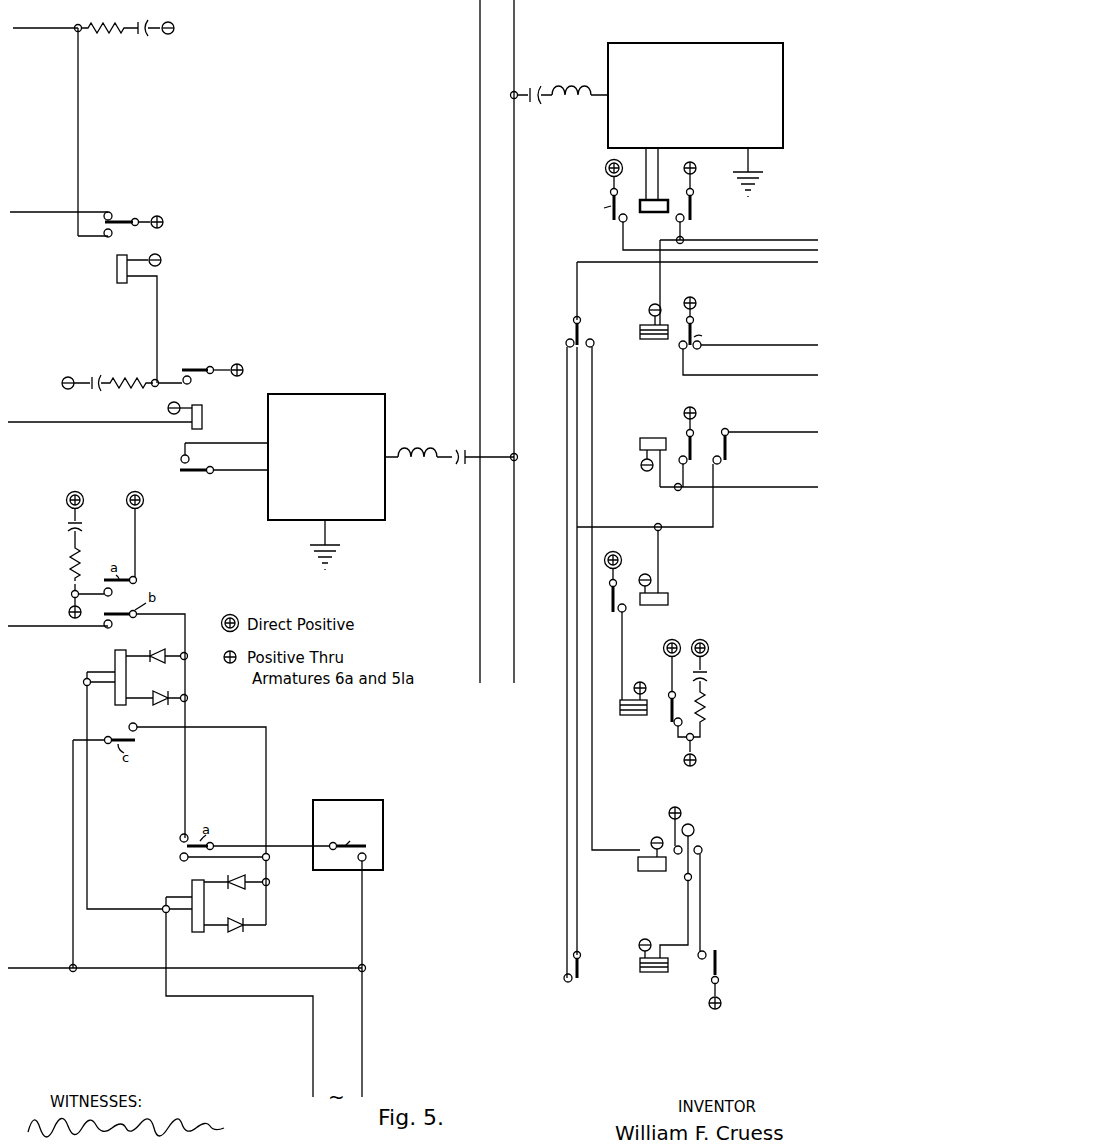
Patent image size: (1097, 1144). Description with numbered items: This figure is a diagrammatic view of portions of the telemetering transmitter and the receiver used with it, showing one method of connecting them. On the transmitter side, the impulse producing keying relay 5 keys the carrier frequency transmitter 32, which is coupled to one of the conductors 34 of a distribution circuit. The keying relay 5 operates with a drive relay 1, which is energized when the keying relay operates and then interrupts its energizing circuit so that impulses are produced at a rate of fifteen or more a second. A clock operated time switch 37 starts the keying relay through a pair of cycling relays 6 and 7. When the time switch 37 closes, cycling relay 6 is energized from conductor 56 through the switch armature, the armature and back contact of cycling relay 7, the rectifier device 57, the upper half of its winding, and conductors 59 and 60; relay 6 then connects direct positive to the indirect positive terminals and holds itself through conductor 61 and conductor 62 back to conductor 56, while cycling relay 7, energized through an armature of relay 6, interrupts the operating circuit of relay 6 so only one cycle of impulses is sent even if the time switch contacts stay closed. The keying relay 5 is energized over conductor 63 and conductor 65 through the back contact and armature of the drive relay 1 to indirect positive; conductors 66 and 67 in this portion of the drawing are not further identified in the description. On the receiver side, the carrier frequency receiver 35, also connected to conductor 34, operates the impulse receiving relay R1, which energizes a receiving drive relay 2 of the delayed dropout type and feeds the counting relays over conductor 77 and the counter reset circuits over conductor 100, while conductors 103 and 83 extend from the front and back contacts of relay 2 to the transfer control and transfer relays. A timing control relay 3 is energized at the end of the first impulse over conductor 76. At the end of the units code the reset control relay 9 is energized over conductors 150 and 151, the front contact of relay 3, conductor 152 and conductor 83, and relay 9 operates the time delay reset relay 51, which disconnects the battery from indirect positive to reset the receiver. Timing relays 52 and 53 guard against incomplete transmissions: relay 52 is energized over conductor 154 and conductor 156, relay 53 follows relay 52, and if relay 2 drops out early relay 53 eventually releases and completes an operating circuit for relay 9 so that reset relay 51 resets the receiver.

The drive relay 1 is at (115, 266).
The receiving drive relay 2 is at (640, 336).
The timing control relay 3 is at (651, 437).
The keying relay 5 is at (202, 416).
The cycling relay 6 is at (136, 726).
The cycling relay 7 is at (204, 901).
The reset control relay 9 is at (667, 600).
The carrier frequency transmitter 32 is at (312, 392).
The conductor 34 is at (514, 298).
The carrier frequency receiver 35 is at (644, 43).
The clock operated time switch 37 is at (383, 841).
The time delay reset relay 51 is at (644, 716).
The timing relay 52 is at (640, 872).
The time delay relay 53 is at (655, 973).
The conductor 56 is at (362, 947).
The rectifier device 57 is at (126, 678).
The conductor 59 is at (87, 840).
The conductor 60 is at (166, 950).
The conductor 61 is at (50, 627).
The conductor 62 is at (58, 968).
The conductor 63 is at (70, 423).
The conductor 65 is at (50, 213).
The conductor 66 is at (78, 142).
The conductor 67 is at (60, 30).
The conductor 76 is at (752, 488).
The conductor 77 is at (740, 240).
The conductor 83 is at (752, 347).
The conductor 100 is at (704, 206).
The conductor 103 is at (755, 376).
The conductor 150 is at (658, 566).
The conductor 151 is at (713, 521).
The conductor 152 is at (762, 433).
The conductor 154 is at (592, 812).
The conductor 156 is at (691, 622).
The impulse receiving relay R1 is at (668, 214).